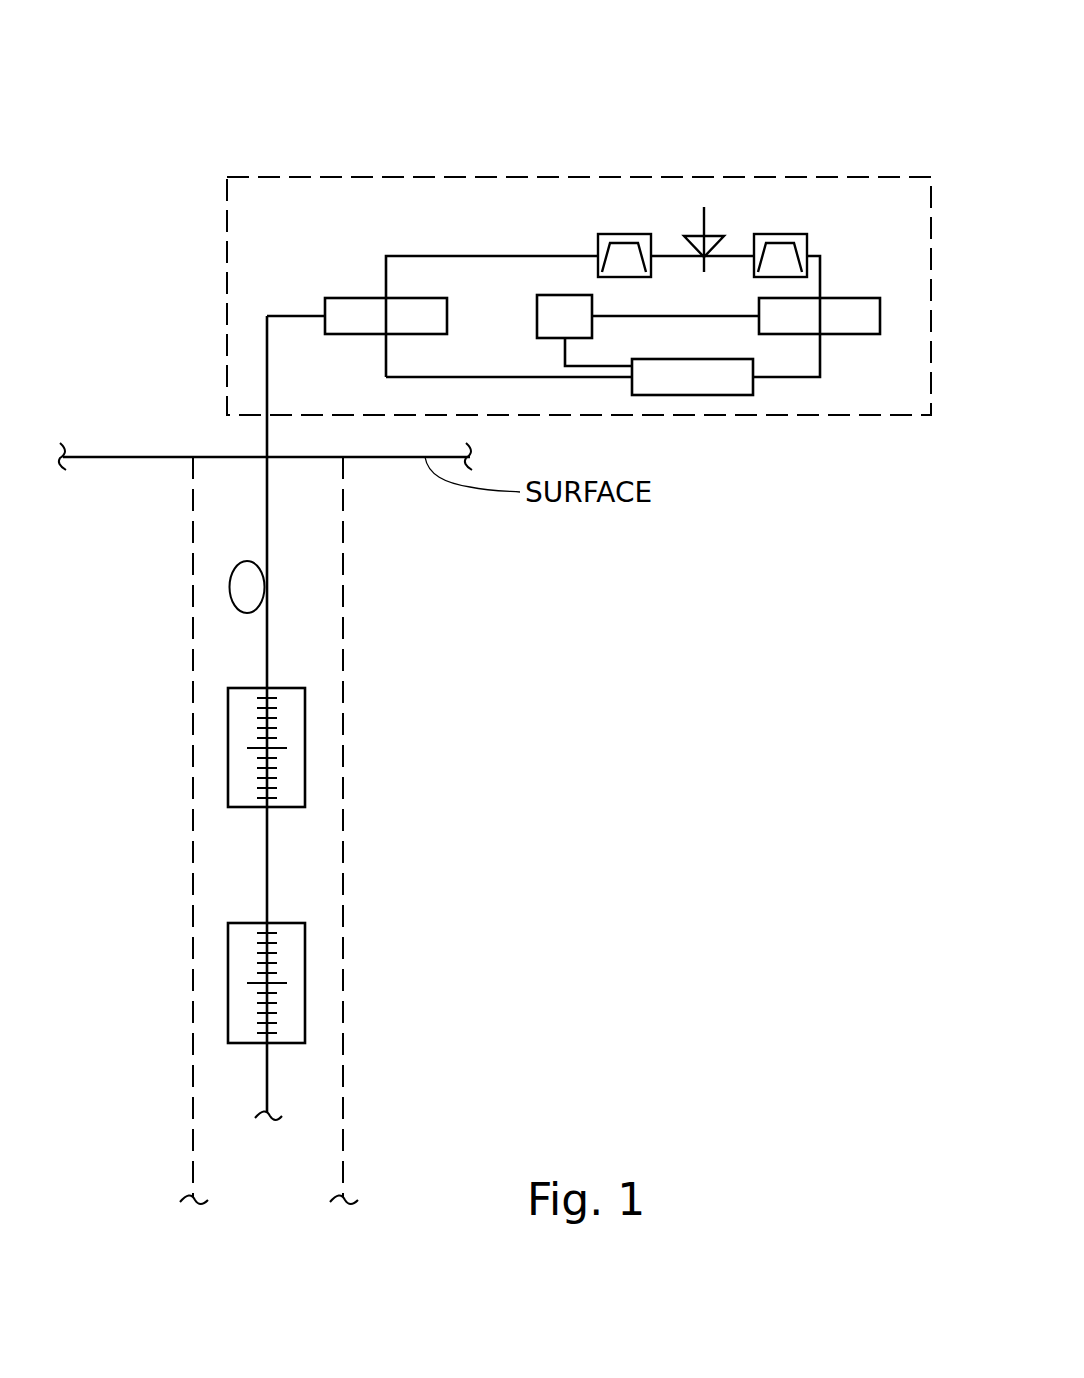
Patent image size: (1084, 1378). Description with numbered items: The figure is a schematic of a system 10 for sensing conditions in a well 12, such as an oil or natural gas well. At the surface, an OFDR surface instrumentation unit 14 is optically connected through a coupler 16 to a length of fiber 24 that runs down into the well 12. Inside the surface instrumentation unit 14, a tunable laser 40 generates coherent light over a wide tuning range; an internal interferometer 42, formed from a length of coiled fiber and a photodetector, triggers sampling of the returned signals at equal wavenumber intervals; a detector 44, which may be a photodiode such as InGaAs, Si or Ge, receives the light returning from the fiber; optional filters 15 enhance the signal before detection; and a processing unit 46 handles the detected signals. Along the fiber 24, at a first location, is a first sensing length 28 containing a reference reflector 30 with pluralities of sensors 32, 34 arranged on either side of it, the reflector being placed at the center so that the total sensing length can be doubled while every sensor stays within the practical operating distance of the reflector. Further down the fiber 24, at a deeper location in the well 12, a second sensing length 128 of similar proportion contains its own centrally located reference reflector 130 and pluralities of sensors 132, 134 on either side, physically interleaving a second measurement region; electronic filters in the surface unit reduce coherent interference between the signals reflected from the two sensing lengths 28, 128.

The system 10 is at (587, 60).
The well 12 is at (313, 625).
The OFDR surface instrumentation unit 14 is at (790, 177).
The filters 15 is at (624, 234).
The coupler 16 is at (362, 298).
The fiber 24 is at (267, 523).
The first sensing length 28 is at (264, 746).
The reference reflector 30 is at (247, 748).
The sensors 32 is at (275, 737).
The sensors 34 is at (275, 770).
The tunable laser 40 is at (723, 395).
The internal interferometer 42 is at (565, 295).
The detector 44 is at (694, 236).
The processing unit 46 is at (853, 298).
The second sensing length 128 is at (264, 981).
The reference reflector 130 is at (247, 983).
The sensors 132 is at (275, 970).
The sensors 134 is at (275, 1005).